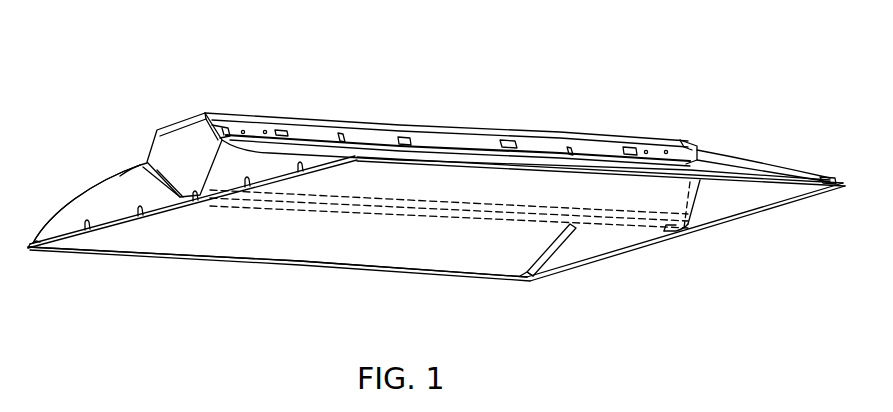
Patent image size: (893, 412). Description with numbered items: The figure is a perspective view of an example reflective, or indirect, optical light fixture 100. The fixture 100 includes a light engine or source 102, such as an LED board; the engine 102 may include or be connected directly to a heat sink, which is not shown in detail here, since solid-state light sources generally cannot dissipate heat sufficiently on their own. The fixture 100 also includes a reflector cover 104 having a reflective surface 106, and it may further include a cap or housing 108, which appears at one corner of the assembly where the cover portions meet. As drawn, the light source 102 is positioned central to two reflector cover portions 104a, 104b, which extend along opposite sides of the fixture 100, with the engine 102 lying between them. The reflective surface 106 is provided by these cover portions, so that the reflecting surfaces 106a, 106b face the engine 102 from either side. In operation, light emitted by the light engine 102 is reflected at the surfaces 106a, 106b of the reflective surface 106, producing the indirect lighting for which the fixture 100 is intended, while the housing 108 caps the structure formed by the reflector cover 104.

The light fixture 100 is at (670, 38).
The light engine 102 is at (418, 222).
The reflector cover 104 is at (73, 225).
The reflector cover portion 104a is at (112, 182).
The reflector cover portion 104b is at (723, 160).
The reflective surface 106 is at (110, 259).
The first frame rail 106a is at (217, 225).
The second frame tab 106b is at (698, 198).
The housing 108 is at (165, 127).